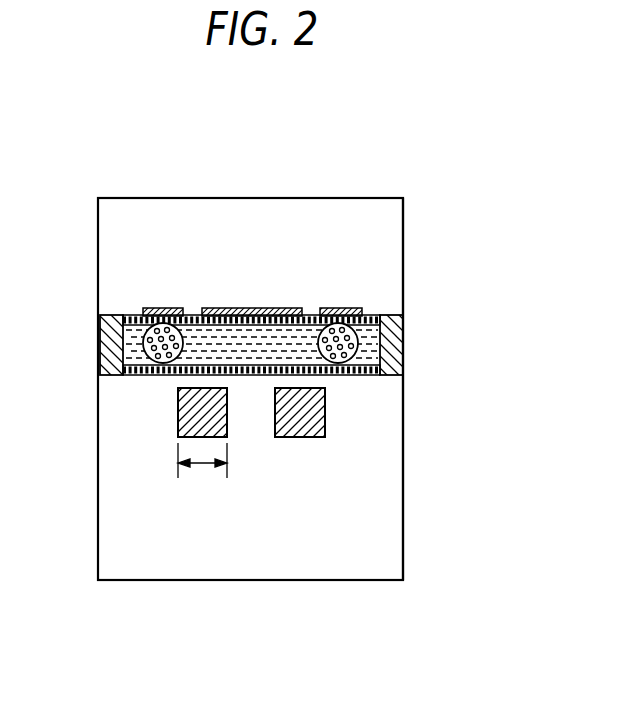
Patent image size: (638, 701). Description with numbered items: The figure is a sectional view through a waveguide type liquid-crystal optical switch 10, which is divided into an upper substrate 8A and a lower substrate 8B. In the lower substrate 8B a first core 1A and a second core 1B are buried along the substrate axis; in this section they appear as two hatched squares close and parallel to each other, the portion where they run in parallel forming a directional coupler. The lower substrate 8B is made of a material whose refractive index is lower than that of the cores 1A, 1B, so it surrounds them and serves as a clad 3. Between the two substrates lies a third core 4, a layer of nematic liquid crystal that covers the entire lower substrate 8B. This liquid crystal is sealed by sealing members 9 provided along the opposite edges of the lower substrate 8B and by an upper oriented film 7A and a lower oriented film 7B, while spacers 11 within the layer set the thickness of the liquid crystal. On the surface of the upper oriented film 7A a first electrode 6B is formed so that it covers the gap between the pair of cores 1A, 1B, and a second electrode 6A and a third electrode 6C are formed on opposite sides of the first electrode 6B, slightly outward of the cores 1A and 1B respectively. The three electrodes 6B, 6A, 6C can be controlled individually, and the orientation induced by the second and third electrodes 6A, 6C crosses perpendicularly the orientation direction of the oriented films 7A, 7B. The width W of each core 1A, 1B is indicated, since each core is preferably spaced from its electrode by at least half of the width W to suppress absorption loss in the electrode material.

The waveguide type liquid-crystal optical switch 10 is at (428, 150).
The upper substrate 8A is at (345, 222).
The lower substrate 8B is at (173, 567).
The clad 3 is at (303, 548).
The sealing members 9 is at (392, 334).
The upper oriented film 7A is at (310, 316).
The lower oriented film 7B is at (150, 377).
The spacers 11 is at (380, 349).
The second electrode 6A is at (164, 308).
The first electrode 6B is at (252, 308).
The third electrode 6C is at (343, 308).
The third core 4 is at (250, 375).
The first core 1A is at (188, 418).
The second core 1B is at (325, 415).
The width of each core W is at (202, 471).